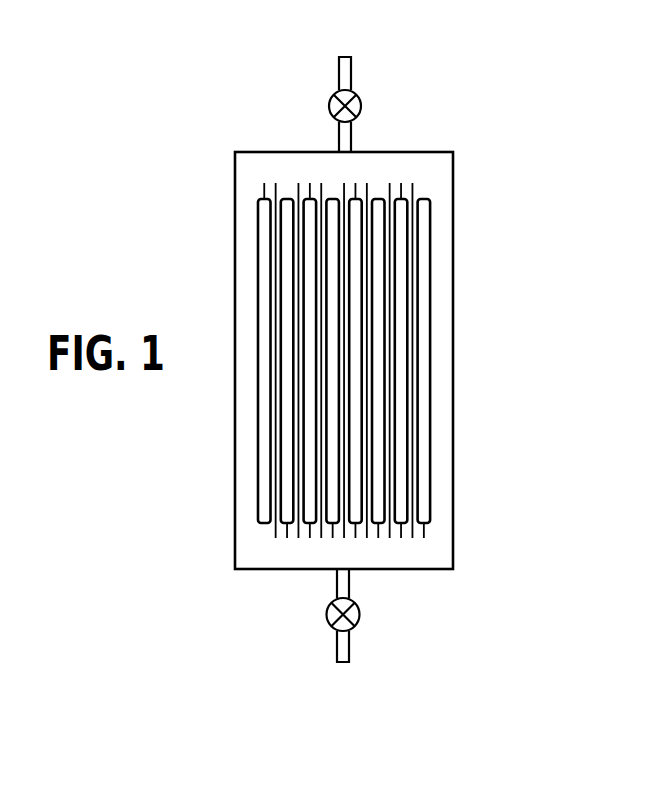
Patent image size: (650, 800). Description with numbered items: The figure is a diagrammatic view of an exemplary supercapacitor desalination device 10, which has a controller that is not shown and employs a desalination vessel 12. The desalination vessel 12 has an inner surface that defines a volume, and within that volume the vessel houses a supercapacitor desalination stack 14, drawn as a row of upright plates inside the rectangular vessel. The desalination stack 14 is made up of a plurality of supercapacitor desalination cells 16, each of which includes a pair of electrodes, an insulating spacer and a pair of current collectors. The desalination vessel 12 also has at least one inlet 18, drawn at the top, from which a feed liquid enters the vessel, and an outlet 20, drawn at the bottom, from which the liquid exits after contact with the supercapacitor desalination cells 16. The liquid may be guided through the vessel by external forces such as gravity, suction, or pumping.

The supercapacitor desalination device 10 is at (445, 105).
The desalination vessel 12 is at (453, 292).
The supercapacitor desalination stack 14 is at (430, 326).
The supercapacitor desalination cells 16 is at (413, 413).
The inlet 18 is at (347, 80).
The outlet 20 is at (342, 640).